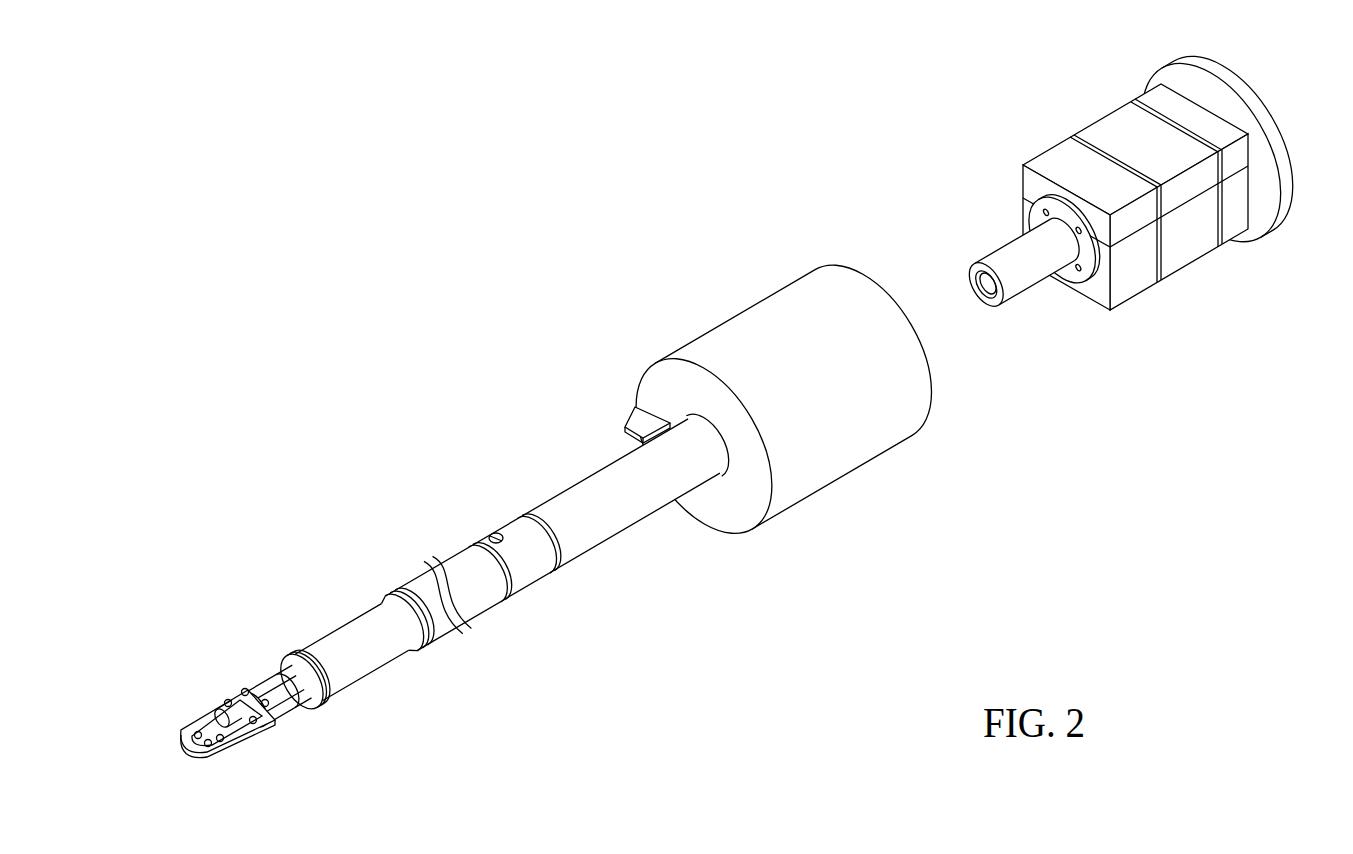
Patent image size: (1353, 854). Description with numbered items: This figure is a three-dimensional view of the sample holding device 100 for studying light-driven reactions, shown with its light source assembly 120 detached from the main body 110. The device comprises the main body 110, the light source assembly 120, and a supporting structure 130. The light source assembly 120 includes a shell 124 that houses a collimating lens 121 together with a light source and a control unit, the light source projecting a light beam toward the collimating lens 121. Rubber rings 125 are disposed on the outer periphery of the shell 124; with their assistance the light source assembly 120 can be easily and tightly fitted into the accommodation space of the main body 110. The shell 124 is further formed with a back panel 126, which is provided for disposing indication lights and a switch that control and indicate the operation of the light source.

The sample holding device 100 is at (419, 202).
The main body 110 is at (546, 468).
The light source assembly 120 is at (1004, 66).
The collimating lens 121 is at (985, 289).
The shell 124 is at (1055, 150).
The rubber rings 125 is at (1163, 275).
The back panel 126 is at (1248, 102).
The supporting structure 130 is at (193, 709).